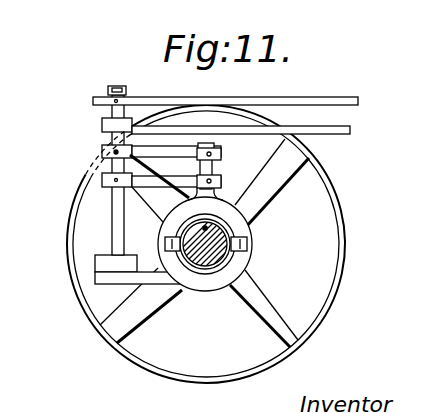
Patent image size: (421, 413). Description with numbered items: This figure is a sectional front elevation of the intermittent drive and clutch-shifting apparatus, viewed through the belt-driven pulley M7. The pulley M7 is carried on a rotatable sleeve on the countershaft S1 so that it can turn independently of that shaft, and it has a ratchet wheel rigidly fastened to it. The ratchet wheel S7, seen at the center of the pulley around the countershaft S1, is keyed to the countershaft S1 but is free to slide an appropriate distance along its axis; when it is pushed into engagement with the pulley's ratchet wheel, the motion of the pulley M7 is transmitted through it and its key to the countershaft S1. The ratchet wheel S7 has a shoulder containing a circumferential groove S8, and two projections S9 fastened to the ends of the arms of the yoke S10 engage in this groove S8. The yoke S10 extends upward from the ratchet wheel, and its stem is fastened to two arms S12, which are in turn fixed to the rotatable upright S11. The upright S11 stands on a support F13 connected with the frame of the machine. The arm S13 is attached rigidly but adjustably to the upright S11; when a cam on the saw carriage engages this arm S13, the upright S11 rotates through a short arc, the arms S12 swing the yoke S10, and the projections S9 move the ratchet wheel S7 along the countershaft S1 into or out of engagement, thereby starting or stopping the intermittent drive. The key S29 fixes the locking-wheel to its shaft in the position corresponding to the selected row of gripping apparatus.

The pulley M7 is at (70, 274).
The support F13 is at (157, 273).
The ratchet wheel S7 is at (196, 270).
The groove S8 is at (211, 270).
The countershaft S1 is at (218, 251).
The key S29 is at (205, 218).
The projections S9 is at (168, 243).
The rotatable upright S11 is at (113, 220).
The arms S12 is at (148, 149).
The yoke S10 is at (210, 200).
The arm S13 is at (296, 99).